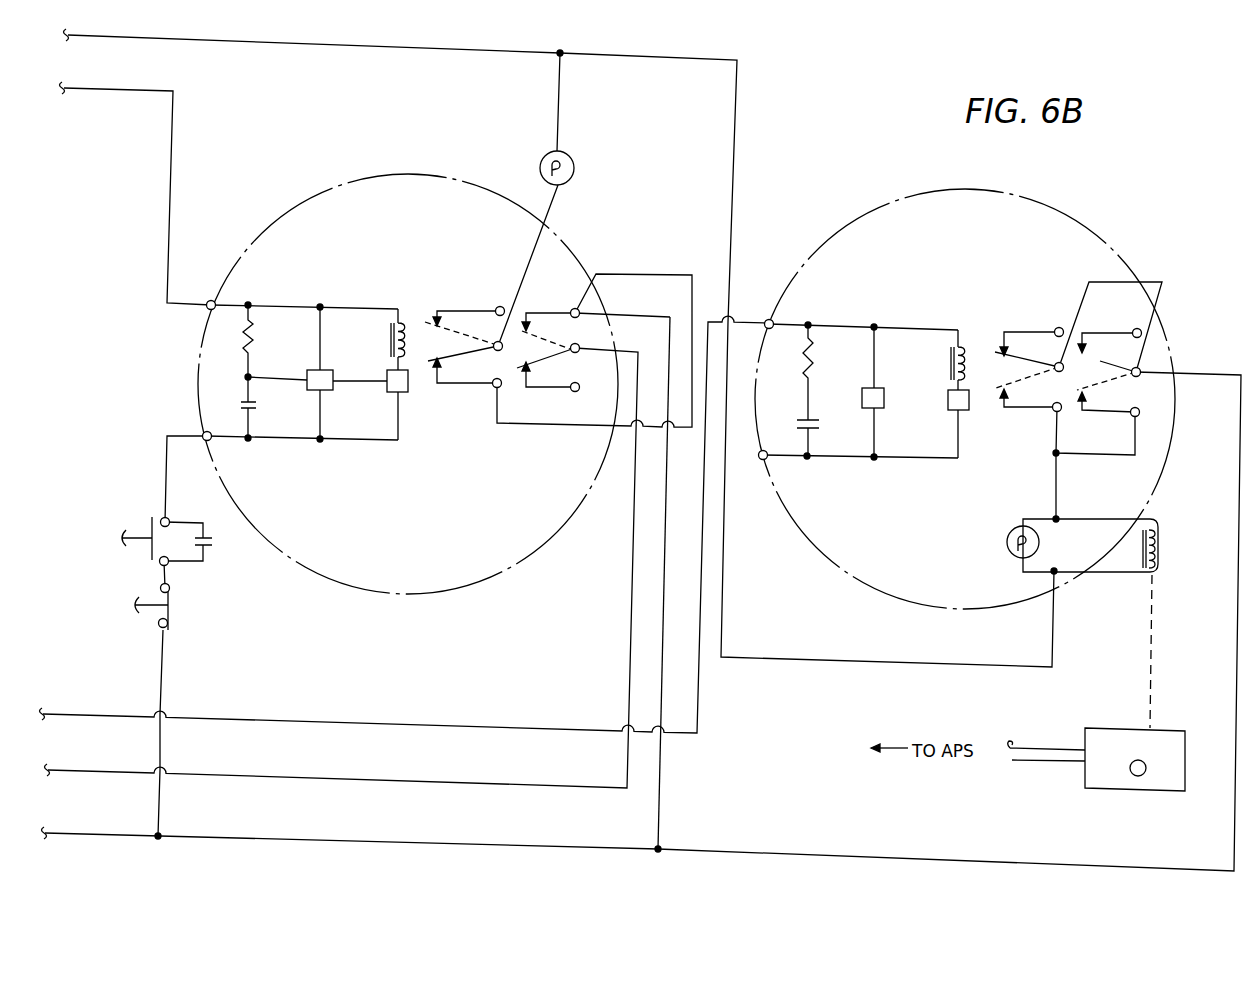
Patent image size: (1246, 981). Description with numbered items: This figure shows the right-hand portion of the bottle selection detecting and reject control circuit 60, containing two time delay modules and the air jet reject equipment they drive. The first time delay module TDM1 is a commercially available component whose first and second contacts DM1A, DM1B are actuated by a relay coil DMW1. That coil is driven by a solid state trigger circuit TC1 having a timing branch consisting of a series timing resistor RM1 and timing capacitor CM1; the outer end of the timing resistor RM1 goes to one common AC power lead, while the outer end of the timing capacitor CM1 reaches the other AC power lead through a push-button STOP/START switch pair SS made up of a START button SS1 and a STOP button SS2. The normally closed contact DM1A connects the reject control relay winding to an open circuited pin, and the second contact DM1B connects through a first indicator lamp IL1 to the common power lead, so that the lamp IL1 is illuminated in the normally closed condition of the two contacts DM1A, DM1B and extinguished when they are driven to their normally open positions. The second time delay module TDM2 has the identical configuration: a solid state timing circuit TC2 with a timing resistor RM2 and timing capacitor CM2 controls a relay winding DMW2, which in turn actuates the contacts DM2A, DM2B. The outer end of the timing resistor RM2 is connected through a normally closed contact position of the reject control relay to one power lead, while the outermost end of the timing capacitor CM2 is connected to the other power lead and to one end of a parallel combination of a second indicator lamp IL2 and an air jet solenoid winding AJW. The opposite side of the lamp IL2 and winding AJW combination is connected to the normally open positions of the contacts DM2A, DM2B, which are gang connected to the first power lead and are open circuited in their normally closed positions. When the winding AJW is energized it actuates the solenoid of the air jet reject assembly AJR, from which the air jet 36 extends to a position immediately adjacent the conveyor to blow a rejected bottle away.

The first time delay module TDM1 is at (592, 262).
The second time delay module TDM2 is at (1103, 244).
The timing resistor RM1 is at (231, 341).
The timing capacitor CM1 is at (230, 409).
The solid state trigger circuit TC1 is at (305, 406).
The relay coil DMW1 is at (388, 362).
The first indicator lamp IL1 is at (566, 159).
The second contact DM1B is at (458, 358).
The normally closed contact DM1A is at (546, 363).
The push-button STOP/START switch pair SS is at (162, 662).
The START button SS1 is at (118, 548).
The STOP button SS2 is at (132, 613).
The bottle selection detecting and reject control circuit 60 is at (514, 686).
The timing resistor RM2 is at (789, 371).
The timing capacitor CM2 is at (790, 437).
The solid state timing circuit TC2 is at (851, 448).
The relay winding DMW2 is at (947, 378).
The first contact DM2B is at (1020, 358).
The second contact DM2A is at (1103, 362).
The second indicator lamp IL2 is at (1009, 550).
The air jet solenoid winding AJW is at (1162, 551).
The air jet reject assembly AJR is at (1104, 683).
The air jet 36 is at (1120, 758).